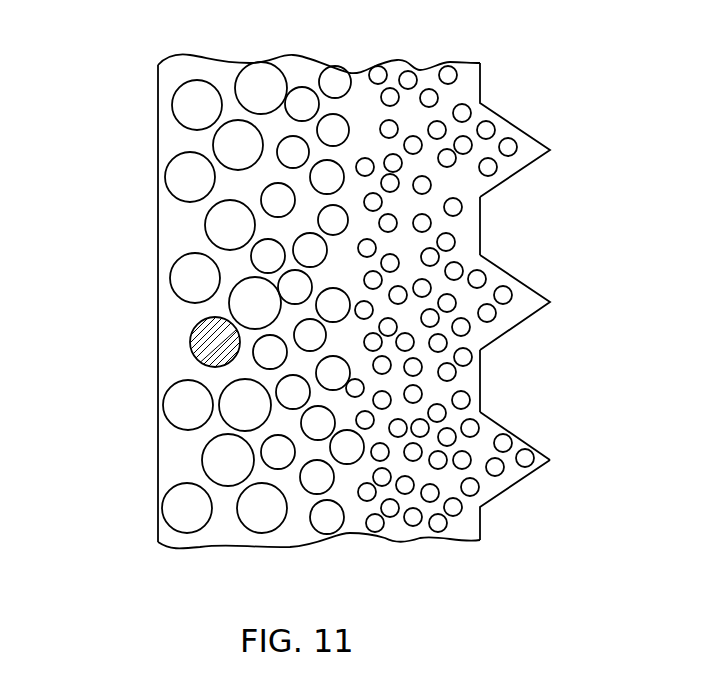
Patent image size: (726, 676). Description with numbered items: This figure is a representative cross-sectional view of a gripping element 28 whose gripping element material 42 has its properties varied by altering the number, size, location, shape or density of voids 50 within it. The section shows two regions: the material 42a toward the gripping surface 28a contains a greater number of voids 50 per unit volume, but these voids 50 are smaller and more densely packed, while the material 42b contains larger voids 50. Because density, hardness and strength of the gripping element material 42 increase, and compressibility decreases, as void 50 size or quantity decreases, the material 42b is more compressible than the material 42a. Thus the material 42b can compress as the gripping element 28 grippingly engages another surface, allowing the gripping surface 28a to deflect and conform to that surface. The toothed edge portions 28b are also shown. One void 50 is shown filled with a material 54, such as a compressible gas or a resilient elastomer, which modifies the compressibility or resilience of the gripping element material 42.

The gripping element 28 is at (594, 69).
The gripping surface 28a is at (482, 392).
The pointed edge portion 28b is at (530, 135).
The gripping element material 42 is at (348, 500).
The material 42a is at (513, 450).
The material 42b is at (177, 224).
The voids 50 is at (183, 103).
The material 54 is at (200, 338).